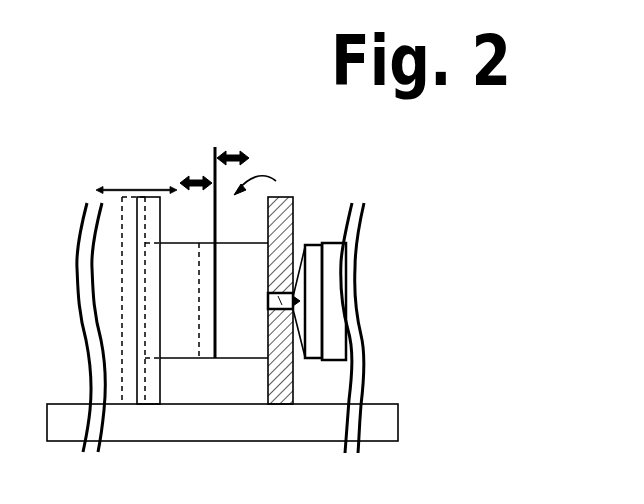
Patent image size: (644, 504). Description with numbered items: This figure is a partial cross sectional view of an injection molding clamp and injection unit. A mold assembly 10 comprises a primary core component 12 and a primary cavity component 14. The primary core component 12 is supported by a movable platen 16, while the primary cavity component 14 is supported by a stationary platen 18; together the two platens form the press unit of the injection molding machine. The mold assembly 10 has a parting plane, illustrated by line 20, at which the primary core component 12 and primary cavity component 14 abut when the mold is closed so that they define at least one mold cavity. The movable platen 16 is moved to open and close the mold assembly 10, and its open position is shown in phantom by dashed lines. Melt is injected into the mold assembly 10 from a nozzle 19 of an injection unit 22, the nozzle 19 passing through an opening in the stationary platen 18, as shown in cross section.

The mold assembly 10 is at (267, 183).
The primary core component 12 is at (207, 343).
The primary cavity component 14 is at (228, 338).
The movable platen 16 is at (158, 197).
The stationary platen 18 is at (293, 200).
The nozzle 19 is at (287, 293).
The parting plane 20 is at (215, 147).
The injection unit 22 is at (330, 333).